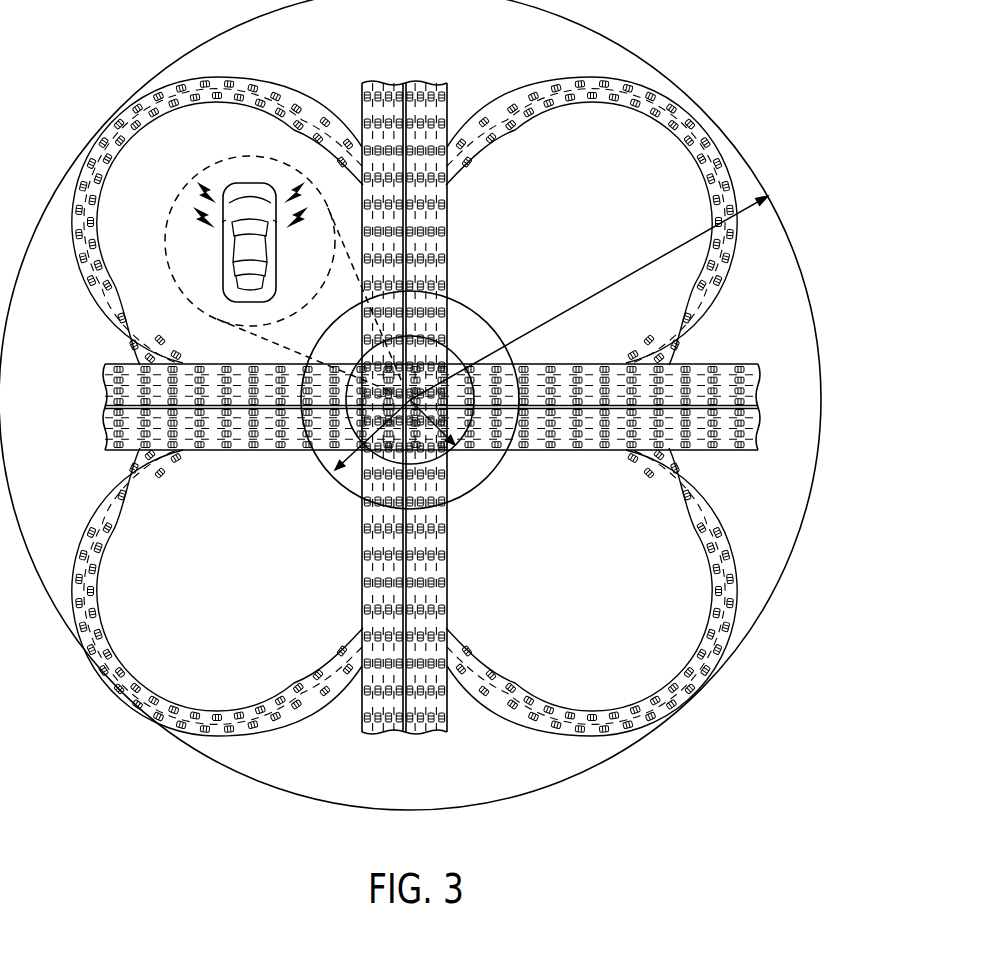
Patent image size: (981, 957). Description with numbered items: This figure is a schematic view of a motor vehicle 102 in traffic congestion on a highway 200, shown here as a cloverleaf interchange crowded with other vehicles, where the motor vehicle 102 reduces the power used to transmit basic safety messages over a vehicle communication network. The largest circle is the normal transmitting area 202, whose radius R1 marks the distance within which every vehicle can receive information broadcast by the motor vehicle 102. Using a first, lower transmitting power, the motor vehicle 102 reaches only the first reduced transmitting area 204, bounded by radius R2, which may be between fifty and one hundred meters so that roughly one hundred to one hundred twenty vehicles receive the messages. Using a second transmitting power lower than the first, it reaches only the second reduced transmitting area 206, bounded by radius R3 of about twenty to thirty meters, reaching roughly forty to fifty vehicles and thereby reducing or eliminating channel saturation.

The motor vehicle 102 is at (223, 254).
The highway 200 is at (455, 253).
The transmitting area 202 is at (716, 108).
The first reduced transmitting area 204 is at (487, 477).
The second reduced transmitting area 206 is at (457, 352).
The radius R1 is at (657, 257).
The radius R2 is at (350, 456).
The radius R3 is at (452, 470).